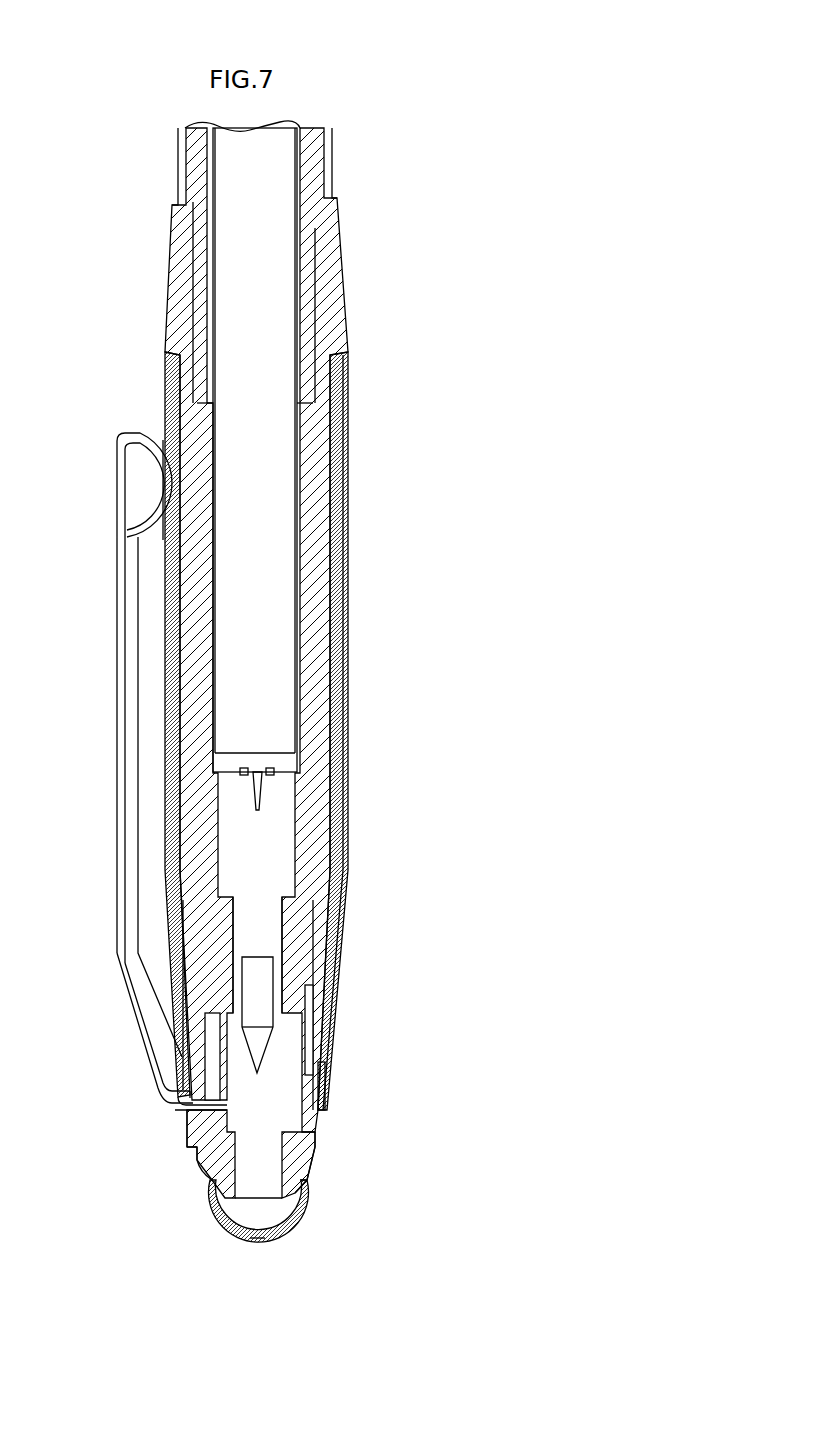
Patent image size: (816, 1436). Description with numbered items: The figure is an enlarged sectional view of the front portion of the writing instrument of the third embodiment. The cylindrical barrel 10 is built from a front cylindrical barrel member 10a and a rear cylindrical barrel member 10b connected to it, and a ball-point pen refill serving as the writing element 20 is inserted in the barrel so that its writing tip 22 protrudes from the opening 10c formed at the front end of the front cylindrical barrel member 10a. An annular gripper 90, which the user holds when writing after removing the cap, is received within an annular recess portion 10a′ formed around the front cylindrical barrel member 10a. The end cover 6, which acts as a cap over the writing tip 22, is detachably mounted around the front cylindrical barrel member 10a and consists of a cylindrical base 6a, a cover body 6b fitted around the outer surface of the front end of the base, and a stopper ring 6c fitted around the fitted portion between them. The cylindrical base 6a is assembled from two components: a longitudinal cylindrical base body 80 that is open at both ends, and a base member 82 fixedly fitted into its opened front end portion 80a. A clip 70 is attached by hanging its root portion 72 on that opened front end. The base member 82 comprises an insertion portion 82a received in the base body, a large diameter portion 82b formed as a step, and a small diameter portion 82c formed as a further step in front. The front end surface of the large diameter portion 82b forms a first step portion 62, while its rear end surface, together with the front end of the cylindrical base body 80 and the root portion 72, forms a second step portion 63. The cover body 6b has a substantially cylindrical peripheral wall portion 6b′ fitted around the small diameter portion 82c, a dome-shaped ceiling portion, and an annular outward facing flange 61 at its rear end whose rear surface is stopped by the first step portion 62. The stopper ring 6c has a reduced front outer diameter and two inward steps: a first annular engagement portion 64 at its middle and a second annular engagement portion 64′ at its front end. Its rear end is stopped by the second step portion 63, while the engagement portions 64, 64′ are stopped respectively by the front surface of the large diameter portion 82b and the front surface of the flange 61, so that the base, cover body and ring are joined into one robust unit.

The cylindrical barrel 10 is at (160, 272).
The front cylindrical barrel member 10a is at (310, 780).
The annular recess portion 10a′ is at (165, 462).
The rear cylindrical barrel member 10b is at (178, 148).
The opening 10c is at (272, 1009).
The writing element 20 is at (260, 512).
The writing tip 22 is at (262, 1048).
The end cover 6 is at (308, 1183).
The cylindrical base 6a is at (352, 882).
The cover body 6b is at (205, 1199).
The peripheral wall portion 6b′ is at (200, 1178).
The stopper ring 6c is at (328, 1140).
The outward facing flange 61 is at (332, 1172).
The first radially outward extending step portion 62 is at (328, 1118).
The second radially outward extending step portion 63 is at (168, 1102).
The first annular engagement portion 64 is at (200, 1165).
The second annular engagement portion 64′ is at (300, 1193).
The clip 70 is at (118, 678).
The root portion 72 is at (180, 1112).
The cylindrical base body 80 is at (343, 745).
The opened front end portion 80a is at (312, 1090).
The base member 82 is at (265, 1240).
The insertion portion 82a is at (180, 1060).
The large diameter portion 82b is at (190, 1125).
The small diameter portion 82c is at (300, 1205).
The annular gripper 90 is at (168, 612).